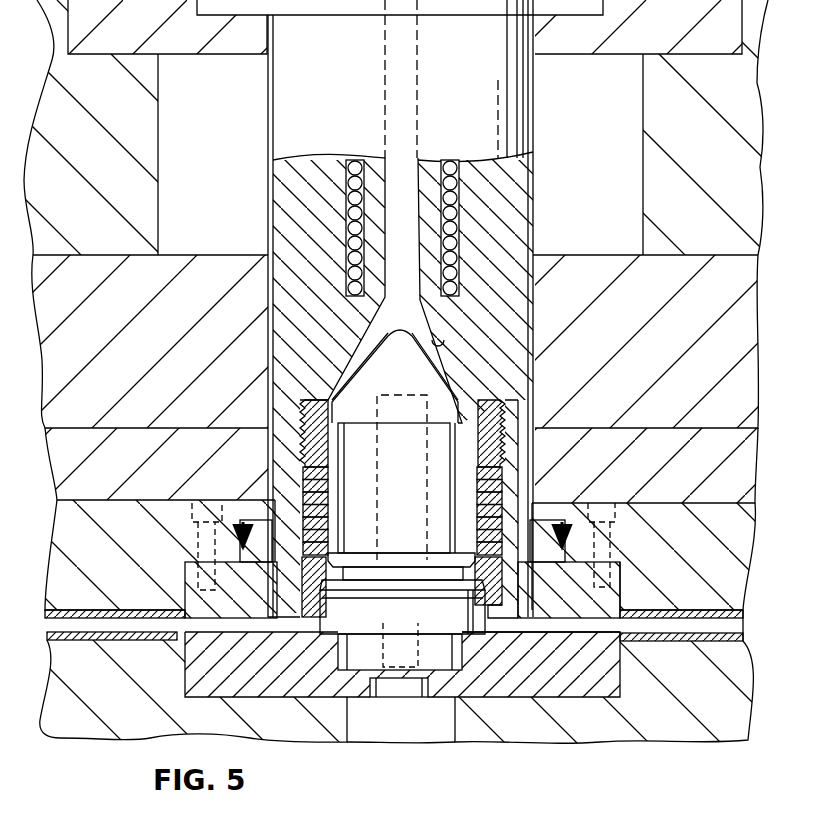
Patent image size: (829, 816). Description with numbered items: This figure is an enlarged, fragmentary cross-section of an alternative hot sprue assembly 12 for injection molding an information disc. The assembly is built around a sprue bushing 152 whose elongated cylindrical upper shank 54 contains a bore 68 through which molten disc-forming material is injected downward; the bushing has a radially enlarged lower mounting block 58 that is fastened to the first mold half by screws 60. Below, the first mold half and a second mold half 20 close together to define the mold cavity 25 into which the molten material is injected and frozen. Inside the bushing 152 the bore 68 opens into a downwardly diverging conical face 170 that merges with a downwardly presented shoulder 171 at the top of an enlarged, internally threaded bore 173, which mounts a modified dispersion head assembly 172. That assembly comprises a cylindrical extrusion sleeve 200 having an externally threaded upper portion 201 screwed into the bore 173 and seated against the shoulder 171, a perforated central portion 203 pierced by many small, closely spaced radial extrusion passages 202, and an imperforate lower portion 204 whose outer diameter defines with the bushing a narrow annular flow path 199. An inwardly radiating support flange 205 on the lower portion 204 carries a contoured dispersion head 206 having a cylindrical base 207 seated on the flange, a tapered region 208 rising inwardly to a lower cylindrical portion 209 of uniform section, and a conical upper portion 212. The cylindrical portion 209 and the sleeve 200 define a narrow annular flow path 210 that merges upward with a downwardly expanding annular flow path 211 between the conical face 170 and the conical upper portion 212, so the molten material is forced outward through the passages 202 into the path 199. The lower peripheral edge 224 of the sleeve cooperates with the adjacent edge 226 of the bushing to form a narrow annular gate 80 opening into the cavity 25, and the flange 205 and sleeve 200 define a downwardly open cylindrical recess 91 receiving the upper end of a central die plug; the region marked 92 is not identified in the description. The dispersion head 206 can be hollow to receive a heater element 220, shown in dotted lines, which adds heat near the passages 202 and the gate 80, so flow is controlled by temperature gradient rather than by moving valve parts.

The hot sprue assembly 12 is at (268, 323).
The second mold half 20 is at (476, 753).
The mold cavity 25 is at (127, 626).
The upper shank 54 is at (522, 130).
The lower mounting block 58 is at (618, 592).
The screws 60 is at (610, 550).
The bore 68 is at (413, 180).
The annular gate 80 is at (291, 635).
The cylindrical recess 91 is at (481, 624).
The retaining nut 92 is at (468, 642).
The sprue bushing 152 is at (507, 254).
The conical face 170 is at (527, 312).
The shoulder 171 is at (500, 392).
The dispersion head assembly 172 is at (369, 628).
The enlarged bore 173 is at (297, 480).
The annular flow path 199 is at (291, 592).
The extrusion sleeve 200 is at (528, 425).
The externally threaded upper portion 201 is at (300, 422).
The extrusion passages 202 is at (516, 474).
The perforated central portion 203 is at (325, 505).
The imperforate lower portion 204 is at (502, 574).
The support flange 205 is at (346, 549).
The contoured dispersion head 206 is at (468, 368).
The cylindrical base 207 is at (430, 556).
The tapered portion 208 is at (330, 575).
The lower cylindrical portion 209 is at (580, 362).
The annular flow path 210 is at (352, 368).
The downwardly expanding annular flow path 211 is at (360, 345).
The conical upper portion 212 is at (438, 342).
The heater element 220 is at (383, 395).
The lower peripheral edge 224 is at (345, 637).
The bushing edge 226 is at (510, 630).